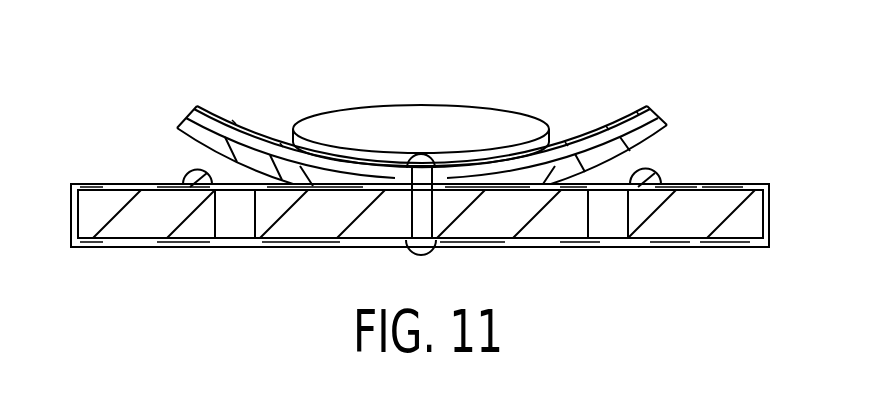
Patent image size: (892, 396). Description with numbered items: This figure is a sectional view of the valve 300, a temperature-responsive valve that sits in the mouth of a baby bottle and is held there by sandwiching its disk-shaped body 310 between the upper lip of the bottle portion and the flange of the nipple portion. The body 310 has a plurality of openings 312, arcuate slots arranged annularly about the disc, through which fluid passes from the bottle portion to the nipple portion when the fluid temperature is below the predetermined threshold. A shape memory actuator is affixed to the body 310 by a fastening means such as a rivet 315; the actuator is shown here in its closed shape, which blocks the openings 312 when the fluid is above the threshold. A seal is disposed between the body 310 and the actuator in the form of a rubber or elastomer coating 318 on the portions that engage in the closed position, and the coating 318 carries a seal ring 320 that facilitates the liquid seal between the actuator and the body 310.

The valve 300 is at (137, 104).
The body 310 is at (737, 190).
The opening 312 is at (607, 230).
The rivet 315 is at (425, 153).
The elastomer coating 318 is at (612, 135).
The seal ring 320 is at (192, 171).